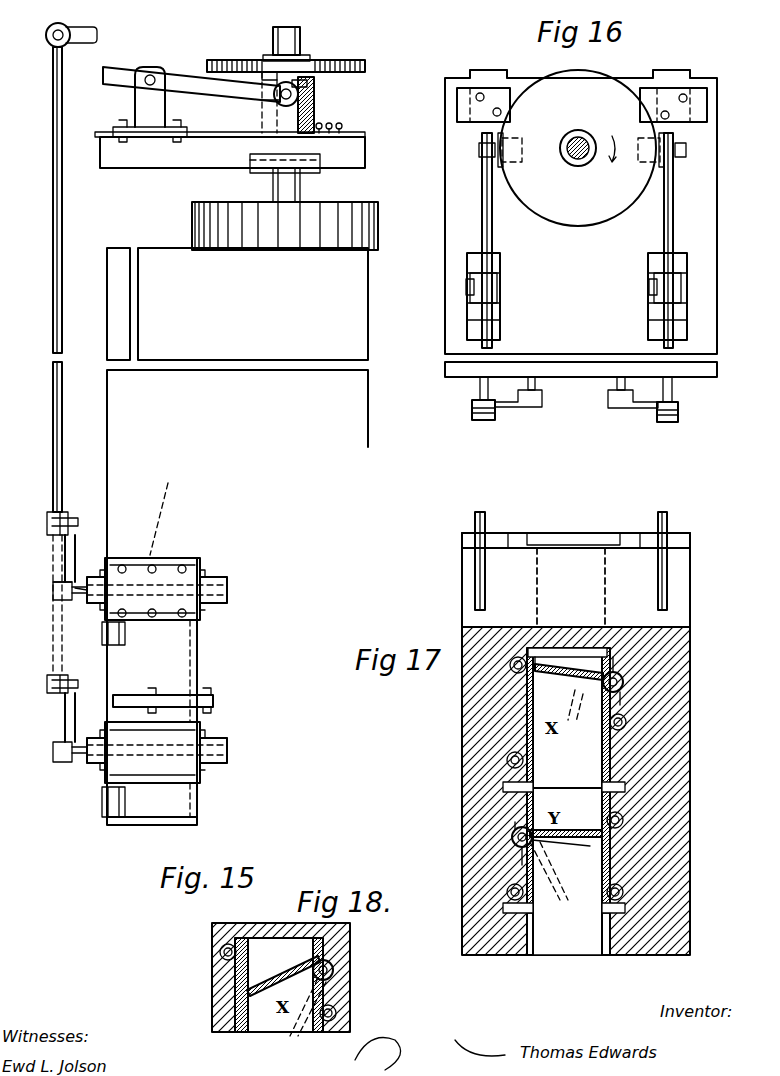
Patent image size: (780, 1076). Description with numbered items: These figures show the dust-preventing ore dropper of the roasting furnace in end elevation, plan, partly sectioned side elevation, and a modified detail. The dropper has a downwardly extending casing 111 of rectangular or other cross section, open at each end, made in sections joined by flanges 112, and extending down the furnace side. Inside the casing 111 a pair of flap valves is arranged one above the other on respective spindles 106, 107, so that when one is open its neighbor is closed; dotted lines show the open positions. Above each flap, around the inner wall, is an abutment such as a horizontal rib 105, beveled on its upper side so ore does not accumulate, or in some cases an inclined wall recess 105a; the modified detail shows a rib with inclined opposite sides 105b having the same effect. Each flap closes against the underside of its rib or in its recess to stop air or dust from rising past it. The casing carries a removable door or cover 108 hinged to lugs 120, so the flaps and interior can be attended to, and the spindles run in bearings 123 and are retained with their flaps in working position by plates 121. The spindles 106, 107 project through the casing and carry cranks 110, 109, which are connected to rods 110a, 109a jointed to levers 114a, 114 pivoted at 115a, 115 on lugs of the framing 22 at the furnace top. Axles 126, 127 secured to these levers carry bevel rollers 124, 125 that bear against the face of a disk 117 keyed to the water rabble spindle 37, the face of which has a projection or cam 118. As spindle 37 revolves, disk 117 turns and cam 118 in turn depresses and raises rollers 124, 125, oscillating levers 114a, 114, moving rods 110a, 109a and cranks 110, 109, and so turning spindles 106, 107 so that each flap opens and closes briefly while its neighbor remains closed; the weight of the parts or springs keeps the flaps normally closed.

In FIG. 15, the framing 22 is at (231, 345).
In FIG. 16, the framing 22 is at (693, 80).
In FIG. 15, the water rabble spindle 37 is at (308, 38).
In FIG. 16, the water rabble spindle 37 is at (581, 137).
In FIG. 17, the horizontal rib 105 is at (565, 672).
In FIG. 17, the wall recess 105a is at (588, 842).
In FIG. 18, the inclined rib 105b is at (278, 970).
In FIG. 15, the flap valve spindle 106 is at (80, 600).
In FIG. 16, the flap valve spindle 106 is at (612, 383).
In FIG. 17, the flap valve spindle 106 is at (604, 690).
In FIG. 15, the flap valve spindle 107 is at (78, 763).
In FIG. 16, the flap valve spindle 107 is at (555, 387).
In FIG. 15, the removable door or cover 108 is at (107, 560).
In FIG. 15, the crank 109 is at (67, 722).
In FIG. 16, the crank 109 is at (522, 408).
In FIG. 15, the rod 109a is at (55, 640).
In FIG. 16, the rod 109a is at (477, 418).
In FIG. 17, the rod 109a is at (487, 585).
In FIG. 15, the crank 110 is at (73, 533).
In FIG. 16, the crank 110 is at (627, 412).
In FIG. 15, the rod 110a is at (64, 222).
In FIG. 16, the rod 110a is at (663, 427).
In FIG. 17, the rod 110a is at (640, 598).
In FIG. 15, the casing 111 is at (200, 676).
In FIG. 17, the casing 111 is at (564, 801).
In FIG. 18, the casing 111 is at (249, 1022).
In FIG. 15, the channel axis 111a is at (165, 505).
In FIG. 17, the channel axis 111a is at (540, 608).
In FIG. 15, the flanges 112 is at (217, 700).
In FIG. 16, the lever 114 is at (492, 238).
In FIG. 15, the lever 114a is at (100, 44).
In FIG. 16, the lever 114a is at (662, 232).
In FIG. 16, the pivot 115 is at (498, 286).
In FIG. 15, the pivot 115a is at (152, 67).
In FIG. 16, the pivot 115a is at (654, 288).
In FIG. 15, the disk or plate 117 is at (347, 74).
In FIG. 16, the disk or plate 117 is at (578, 148).
In FIG. 15, the projection or cam 118 is at (263, 75).
In FIG. 17, the lugs 120 is at (510, 758).
In FIG. 18, the lugs 120 is at (278, 982).
In FIG. 15, the plates 121 is at (168, 568).
In FIG. 17, the plates 121 is at (512, 832).
In FIG. 15, the bearings 123 is at (97, 578).
In FIG. 15, the bevel roller 124 is at (283, 106).
In FIG. 16, the bevel roller 124 is at (643, 167).
In FIG. 16, the bevel roller 125 is at (515, 137).
In FIG. 15, the axle or projection 126 is at (286, 100).
In FIG. 16, the axle or projection 126 is at (684, 150).
In FIG. 16, the axle or projection 127 is at (497, 167).